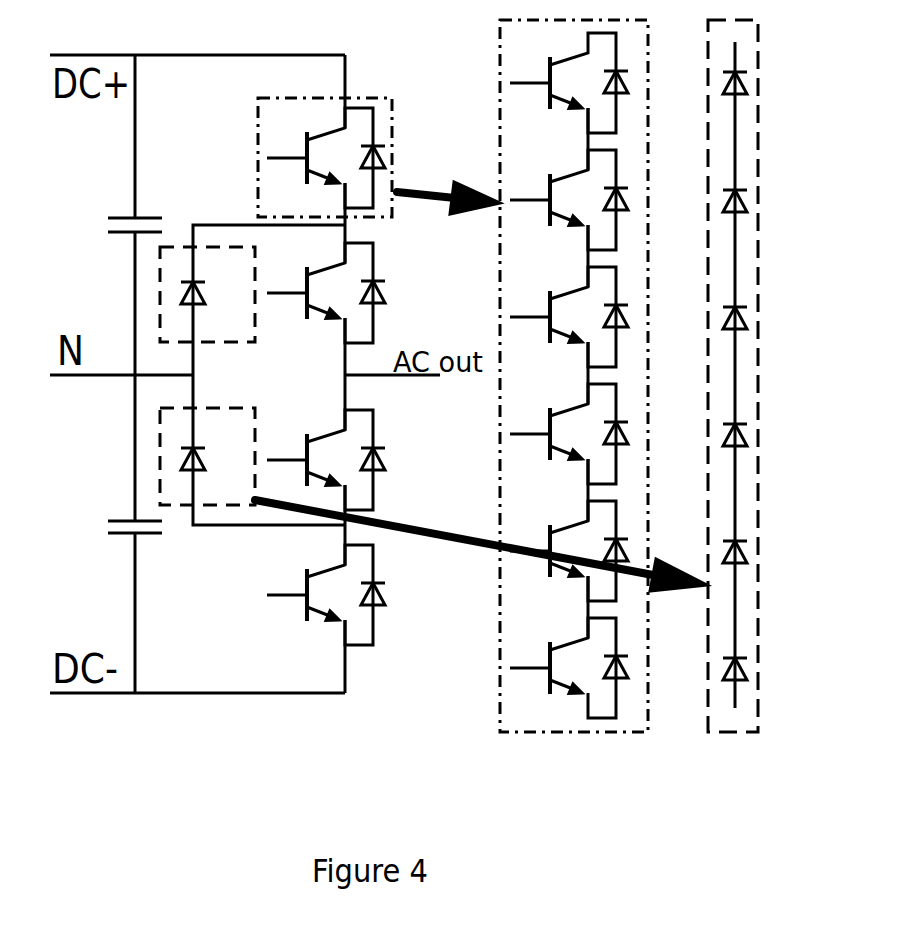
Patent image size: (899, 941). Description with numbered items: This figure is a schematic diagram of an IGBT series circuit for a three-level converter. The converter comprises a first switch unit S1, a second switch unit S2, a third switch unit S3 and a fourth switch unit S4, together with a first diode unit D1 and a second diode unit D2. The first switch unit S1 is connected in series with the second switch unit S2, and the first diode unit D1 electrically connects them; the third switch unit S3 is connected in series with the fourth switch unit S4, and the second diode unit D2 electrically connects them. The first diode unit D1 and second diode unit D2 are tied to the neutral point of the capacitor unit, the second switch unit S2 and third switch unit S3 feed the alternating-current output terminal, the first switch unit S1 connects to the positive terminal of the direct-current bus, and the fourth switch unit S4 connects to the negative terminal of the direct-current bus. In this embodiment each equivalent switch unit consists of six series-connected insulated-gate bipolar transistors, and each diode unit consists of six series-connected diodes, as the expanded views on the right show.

The first switch unit S1 is at (342, 156).
The second switch unit S2 is at (345, 290).
The third switch unit S3 is at (345, 457).
The fourth switch unit S4 is at (346, 591).
The first diode unit D1 is at (207, 294).
The second diode unit D2 is at (207, 458).